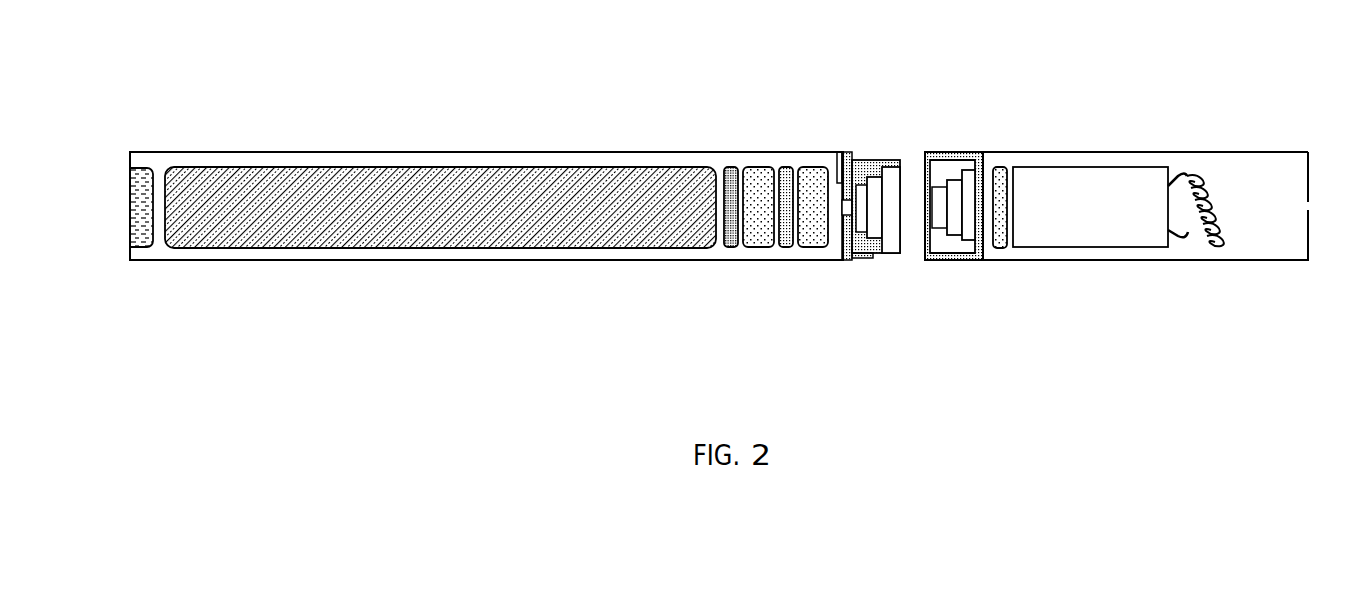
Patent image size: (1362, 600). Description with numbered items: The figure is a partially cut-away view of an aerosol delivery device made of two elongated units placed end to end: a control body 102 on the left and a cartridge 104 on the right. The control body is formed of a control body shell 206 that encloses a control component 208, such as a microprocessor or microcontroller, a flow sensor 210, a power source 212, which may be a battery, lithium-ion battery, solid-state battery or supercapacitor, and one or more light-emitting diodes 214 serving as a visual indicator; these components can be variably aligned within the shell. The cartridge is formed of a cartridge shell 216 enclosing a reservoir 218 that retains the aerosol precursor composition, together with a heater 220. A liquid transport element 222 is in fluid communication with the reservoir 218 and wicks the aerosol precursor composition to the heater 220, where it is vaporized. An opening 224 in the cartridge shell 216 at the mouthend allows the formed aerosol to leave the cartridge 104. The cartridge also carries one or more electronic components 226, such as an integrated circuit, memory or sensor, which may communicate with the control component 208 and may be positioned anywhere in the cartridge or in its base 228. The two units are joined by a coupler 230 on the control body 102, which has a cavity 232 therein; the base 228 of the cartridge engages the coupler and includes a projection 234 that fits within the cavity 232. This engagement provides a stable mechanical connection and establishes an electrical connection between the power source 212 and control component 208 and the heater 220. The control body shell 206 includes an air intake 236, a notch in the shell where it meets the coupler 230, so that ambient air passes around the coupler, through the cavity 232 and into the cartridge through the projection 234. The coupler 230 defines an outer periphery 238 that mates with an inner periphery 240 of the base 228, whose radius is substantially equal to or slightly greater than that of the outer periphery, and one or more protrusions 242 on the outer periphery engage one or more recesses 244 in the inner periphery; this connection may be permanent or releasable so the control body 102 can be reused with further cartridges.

The control body 102 is at (485, 187).
The cartridge 104 is at (1116, 208).
The control body shell 206 is at (486, 233).
The control component 208 is at (739, 240).
The flow sensor 210 is at (795, 240).
The power source 212 is at (440, 240).
The light-emitting diode 214 is at (162, 241).
The cartridge shell 216 is at (1116, 250).
The reservoir 218 is at (1090, 233).
The heater 220 is at (1246, 238).
The liquid transport element 222 is at (1206, 245).
The opening 224 is at (1267, 183).
The electronic components 226 is at (1021, 233).
The base 228 is at (1006, 243).
The coupler 230 is at (877, 193).
The cavity 232 is at (850, 155).
The projection 234 is at (982, 173).
The air intake 236 is at (821, 183).
The outer periphery 238 is at (906, 180).
The inner periphery 240 is at (929, 153).
The protrusion 242 is at (883, 301).
The recess 244 is at (953, 216).